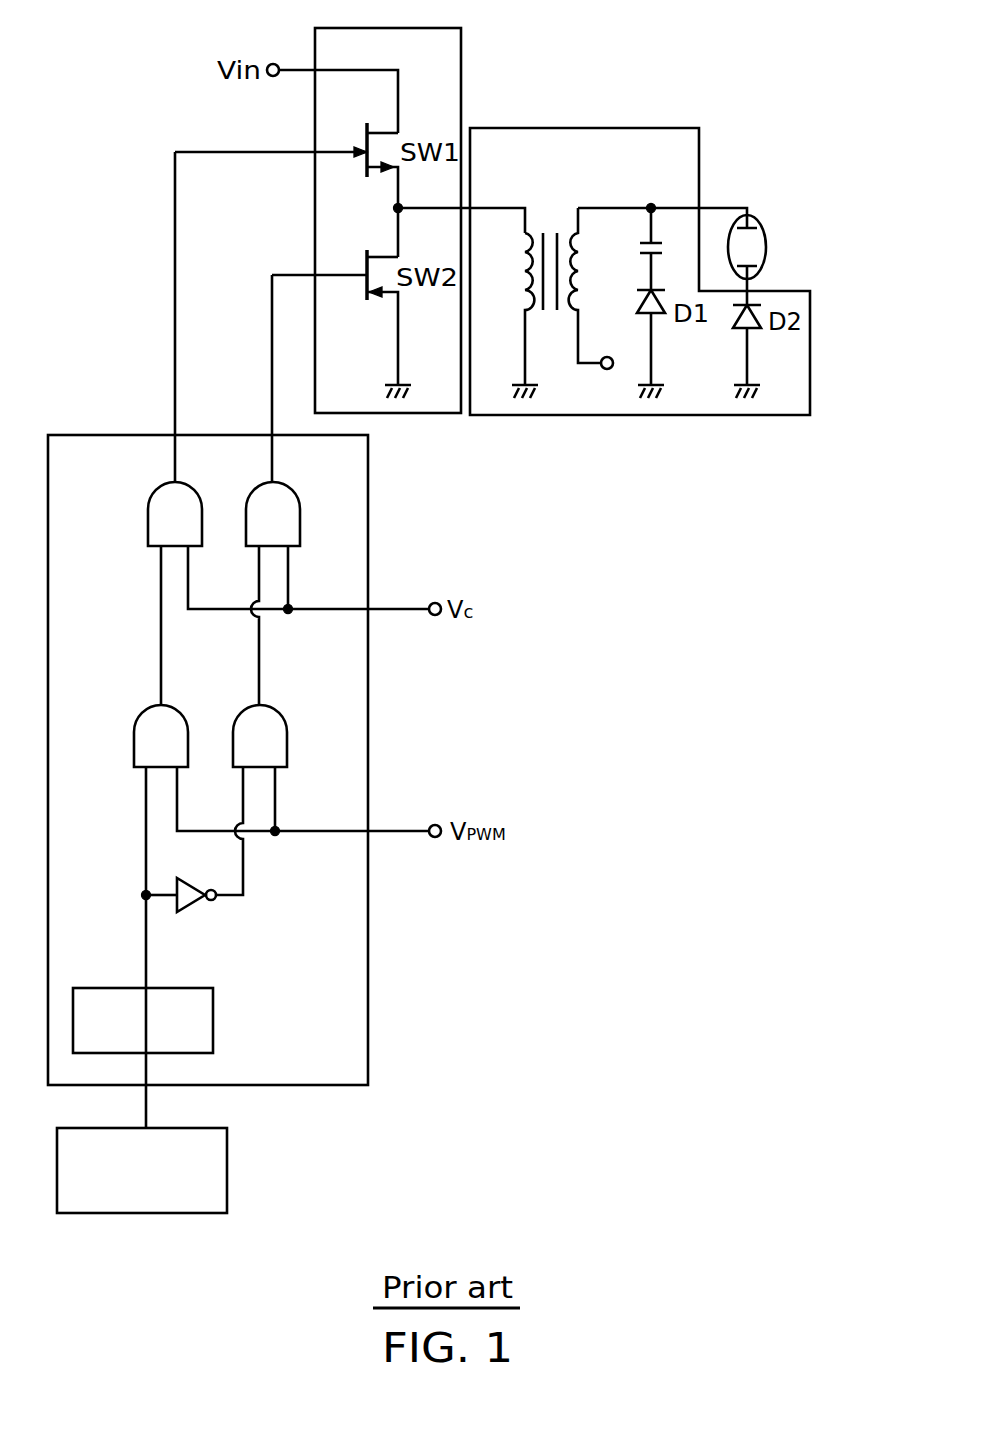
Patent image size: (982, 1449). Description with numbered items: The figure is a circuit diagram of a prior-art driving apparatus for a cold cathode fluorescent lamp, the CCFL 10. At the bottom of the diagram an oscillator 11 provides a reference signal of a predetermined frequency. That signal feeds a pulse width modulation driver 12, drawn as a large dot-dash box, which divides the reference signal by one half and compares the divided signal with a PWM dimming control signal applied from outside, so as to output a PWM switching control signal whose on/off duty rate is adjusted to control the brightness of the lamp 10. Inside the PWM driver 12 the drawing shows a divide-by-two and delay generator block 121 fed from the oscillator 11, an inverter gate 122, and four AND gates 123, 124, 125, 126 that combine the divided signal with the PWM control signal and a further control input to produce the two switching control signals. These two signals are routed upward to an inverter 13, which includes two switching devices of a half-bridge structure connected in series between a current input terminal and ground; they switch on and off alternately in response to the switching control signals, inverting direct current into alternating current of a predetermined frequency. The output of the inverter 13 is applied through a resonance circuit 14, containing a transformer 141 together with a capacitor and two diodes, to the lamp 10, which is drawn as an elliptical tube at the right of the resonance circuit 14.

The CCFL 10 is at (766, 243).
The oscillator 11 is at (228, 1170).
The pulse width modulation (PWM) driver 12 is at (368, 547).
The inverter 13 is at (461, 62).
The resonance circuit 14 is at (663, 128).
The transformer 141 is at (553, 222).
The divide-by-2 and Td generator 121 is at (215, 1020).
The inverter 122 is at (194, 908).
The AND gate 123 is at (136, 725).
The AND gate 124 is at (286, 725).
The AND gate 125 is at (150, 507).
The AND gate 126 is at (297, 506).